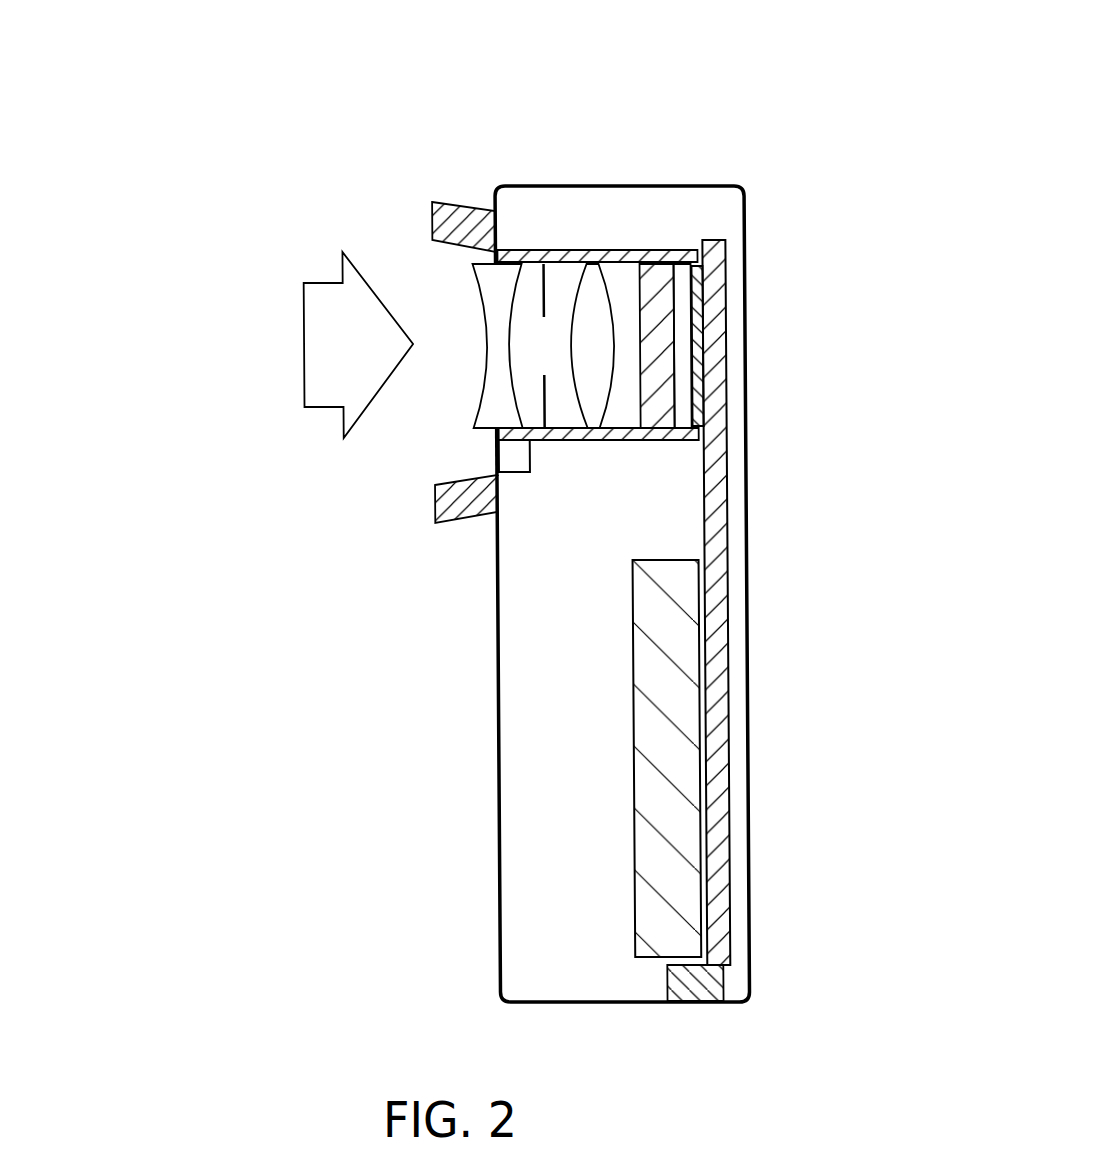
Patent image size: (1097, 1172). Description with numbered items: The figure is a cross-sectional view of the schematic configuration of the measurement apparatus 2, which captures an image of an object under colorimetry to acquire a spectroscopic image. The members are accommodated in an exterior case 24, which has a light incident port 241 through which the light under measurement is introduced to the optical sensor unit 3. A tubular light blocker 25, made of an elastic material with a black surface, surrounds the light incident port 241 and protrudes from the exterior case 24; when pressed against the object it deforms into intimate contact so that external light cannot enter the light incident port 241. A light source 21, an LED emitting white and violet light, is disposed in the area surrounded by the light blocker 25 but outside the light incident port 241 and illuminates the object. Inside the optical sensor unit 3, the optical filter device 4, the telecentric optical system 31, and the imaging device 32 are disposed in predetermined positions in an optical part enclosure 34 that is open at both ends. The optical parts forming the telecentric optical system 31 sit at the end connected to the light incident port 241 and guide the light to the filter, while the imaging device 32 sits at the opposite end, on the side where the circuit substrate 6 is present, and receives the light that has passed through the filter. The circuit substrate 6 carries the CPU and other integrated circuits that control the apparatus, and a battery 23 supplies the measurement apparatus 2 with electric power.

The measurement apparatus 2 is at (712, 74).
The optical sensor unit 3 is at (707, 118).
The telecentric optical system 31 is at (598, 262).
The optical part enclosure 34 is at (615, 256).
The optical filter device 4 is at (657, 262).
The imaging device 32 is at (694, 262).
The circuit substrate 6 is at (717, 246).
The light source 21 is at (526, 455).
The battery 23 is at (641, 722).
The exterior case 24 is at (496, 724).
The light incident port 241 is at (496, 435).
The light blocker 25 is at (432, 218).